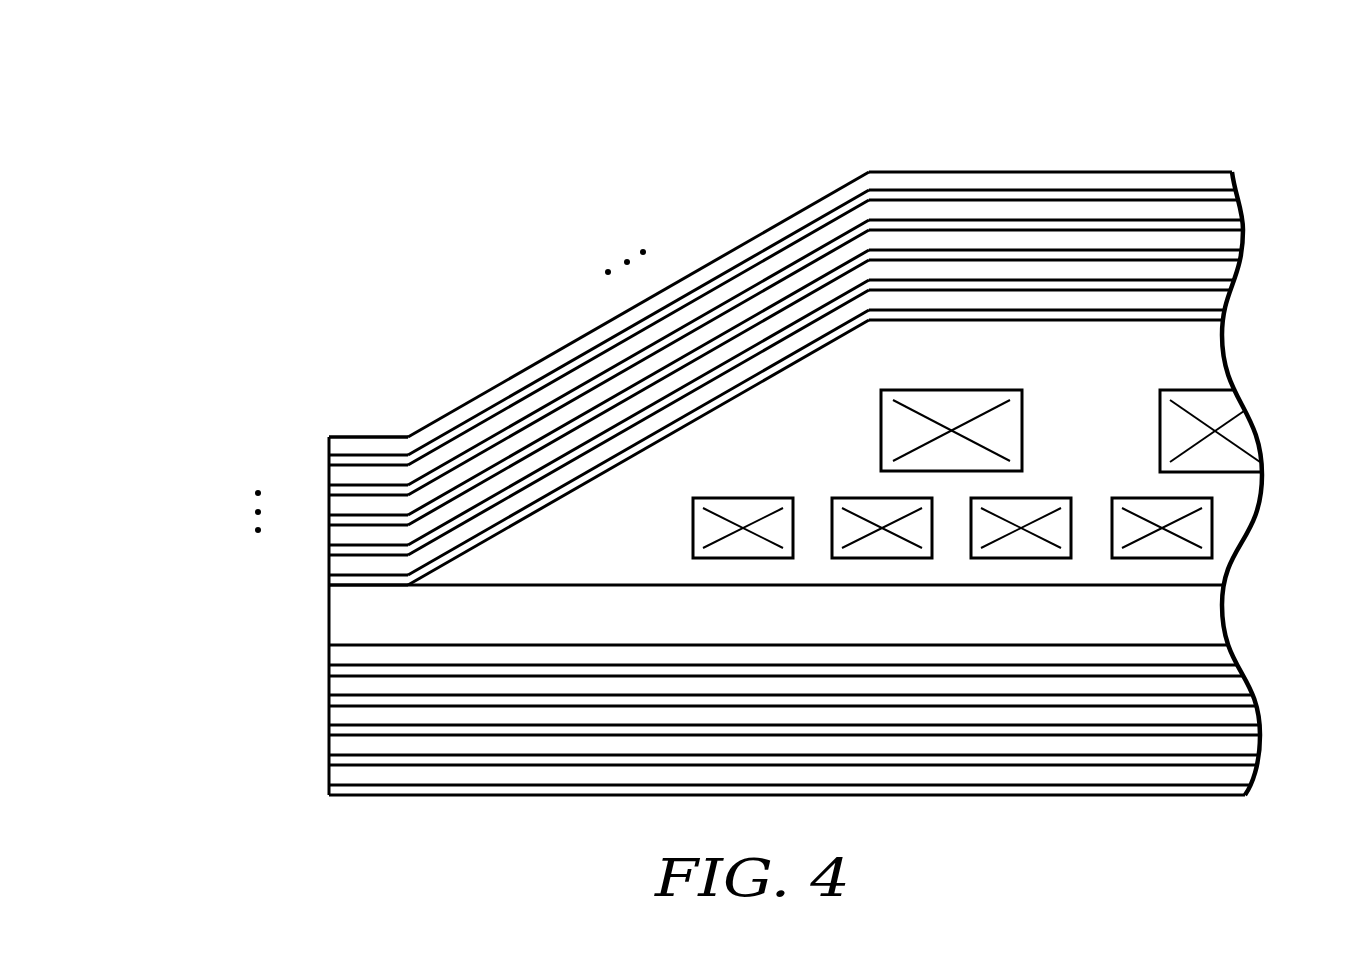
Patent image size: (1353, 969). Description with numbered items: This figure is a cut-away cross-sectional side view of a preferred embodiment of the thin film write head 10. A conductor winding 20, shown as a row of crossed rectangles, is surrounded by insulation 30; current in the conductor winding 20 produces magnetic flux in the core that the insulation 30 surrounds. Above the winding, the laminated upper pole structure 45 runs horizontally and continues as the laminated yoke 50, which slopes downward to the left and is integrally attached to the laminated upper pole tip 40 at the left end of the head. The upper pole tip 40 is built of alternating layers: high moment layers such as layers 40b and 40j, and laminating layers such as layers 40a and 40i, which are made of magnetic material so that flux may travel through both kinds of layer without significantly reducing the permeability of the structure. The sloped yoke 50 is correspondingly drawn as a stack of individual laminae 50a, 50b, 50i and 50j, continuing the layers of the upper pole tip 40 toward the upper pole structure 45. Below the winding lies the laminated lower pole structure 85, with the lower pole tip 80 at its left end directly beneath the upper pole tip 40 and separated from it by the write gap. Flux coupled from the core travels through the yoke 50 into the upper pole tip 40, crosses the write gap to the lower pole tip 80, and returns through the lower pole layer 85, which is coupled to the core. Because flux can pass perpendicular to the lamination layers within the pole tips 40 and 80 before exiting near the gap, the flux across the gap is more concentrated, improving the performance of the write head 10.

The thin film write head 10 is at (263, 262).
The conductor winding 20 is at (1195, 515).
The insulation 30 is at (1110, 362).
The upper pole tip 40 is at (320, 457).
The laminating layer 40a is at (337, 581).
The high moment layer 40b is at (340, 565).
The laminating layer 40i is at (337, 463).
The high moment layer 40j is at (340, 445).
The upper pole structure 45 is at (1074, 246).
The yoke 50 is at (638, 330).
The first sloped layer 50a is at (576, 487).
The second sloped layer 50b is at (615, 447).
The ninth sloped layer 50i is at (681, 307).
The tenth sloped layer 50j is at (726, 268).
The lower pole tip 80 is at (804, 725).
The lower pole structure 85 is at (965, 803).